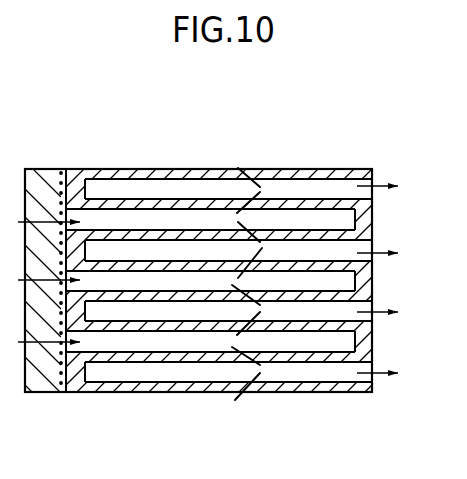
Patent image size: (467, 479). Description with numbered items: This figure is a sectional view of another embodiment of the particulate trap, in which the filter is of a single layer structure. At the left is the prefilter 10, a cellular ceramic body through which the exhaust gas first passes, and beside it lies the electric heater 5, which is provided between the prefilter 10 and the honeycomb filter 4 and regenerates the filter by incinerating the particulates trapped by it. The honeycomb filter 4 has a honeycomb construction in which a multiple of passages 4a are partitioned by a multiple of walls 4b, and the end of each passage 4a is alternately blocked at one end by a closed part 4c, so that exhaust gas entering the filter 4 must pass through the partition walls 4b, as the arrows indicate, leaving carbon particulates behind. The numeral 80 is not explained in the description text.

The heat exchanger assembly 80 is at (9, 117).
The prefilter 10 is at (40, 392).
The electric heater 5 is at (61, 392).
The honeycomb structure filter 4 is at (180, 393).
The passage 4a is at (367, 186).
The wall 4b is at (342, 245).
The closed part 4c is at (364, 284).